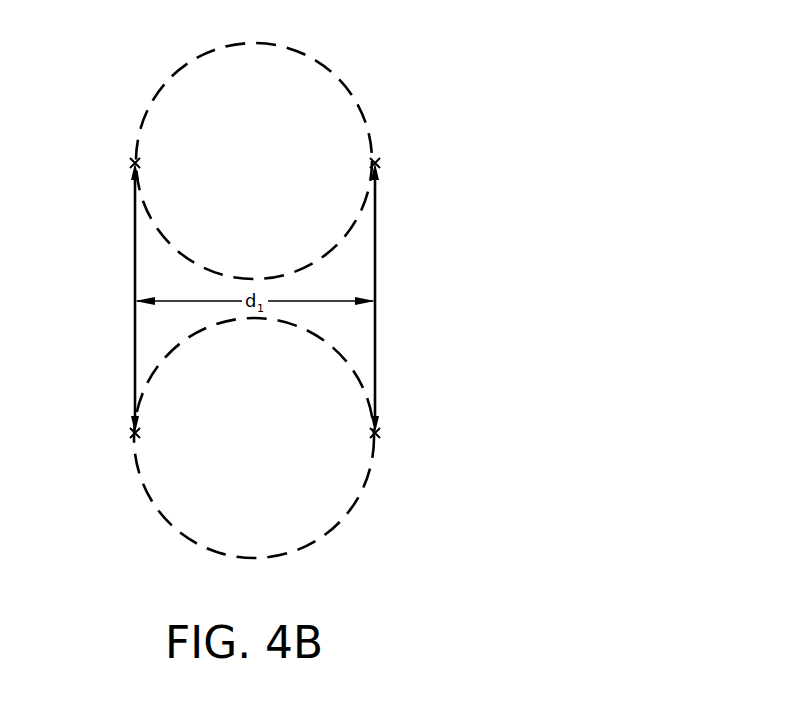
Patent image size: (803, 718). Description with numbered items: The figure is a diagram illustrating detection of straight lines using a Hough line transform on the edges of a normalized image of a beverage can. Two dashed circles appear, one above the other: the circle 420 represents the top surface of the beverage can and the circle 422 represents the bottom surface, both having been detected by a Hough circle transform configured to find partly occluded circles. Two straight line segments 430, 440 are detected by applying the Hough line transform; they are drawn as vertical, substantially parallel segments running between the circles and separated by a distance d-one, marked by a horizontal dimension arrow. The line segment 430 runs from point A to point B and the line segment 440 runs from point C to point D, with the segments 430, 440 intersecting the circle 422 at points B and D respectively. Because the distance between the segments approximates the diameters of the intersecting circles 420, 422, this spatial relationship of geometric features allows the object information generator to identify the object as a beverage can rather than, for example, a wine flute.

The circle 420 is at (333, 73).
The circle 422 is at (359, 496).
The straight line segment 430 is at (135, 252).
The straight line segment 440 is at (375, 283).